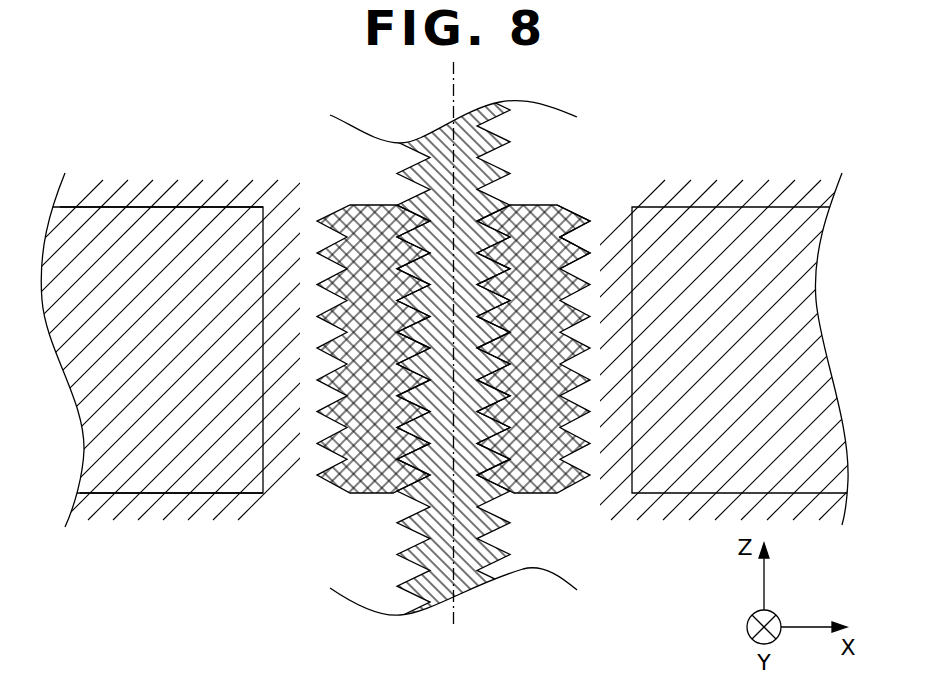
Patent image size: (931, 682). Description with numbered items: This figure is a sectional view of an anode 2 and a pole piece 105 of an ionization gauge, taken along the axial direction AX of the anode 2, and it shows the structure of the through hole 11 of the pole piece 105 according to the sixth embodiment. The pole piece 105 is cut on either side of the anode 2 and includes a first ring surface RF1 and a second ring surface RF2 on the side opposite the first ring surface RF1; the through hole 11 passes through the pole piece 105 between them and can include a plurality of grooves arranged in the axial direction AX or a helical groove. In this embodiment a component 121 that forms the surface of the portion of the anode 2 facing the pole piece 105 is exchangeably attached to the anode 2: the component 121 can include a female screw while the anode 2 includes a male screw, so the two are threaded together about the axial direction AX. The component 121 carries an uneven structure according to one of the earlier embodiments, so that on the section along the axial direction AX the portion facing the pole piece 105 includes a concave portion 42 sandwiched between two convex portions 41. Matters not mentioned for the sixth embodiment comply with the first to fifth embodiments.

The anode 2 is at (388, 565).
The component 121 is at (360, 493).
The convex portion 41 is at (588, 218).
The concave portion 42 is at (565, 236).
The pole piece 105 is at (178, 525).
The through hole 11 is at (610, 495).
The axial direction AX is at (453, 95).
The first ring surface RF1 is at (143, 207).
The second ring surface RF2 is at (113, 493).